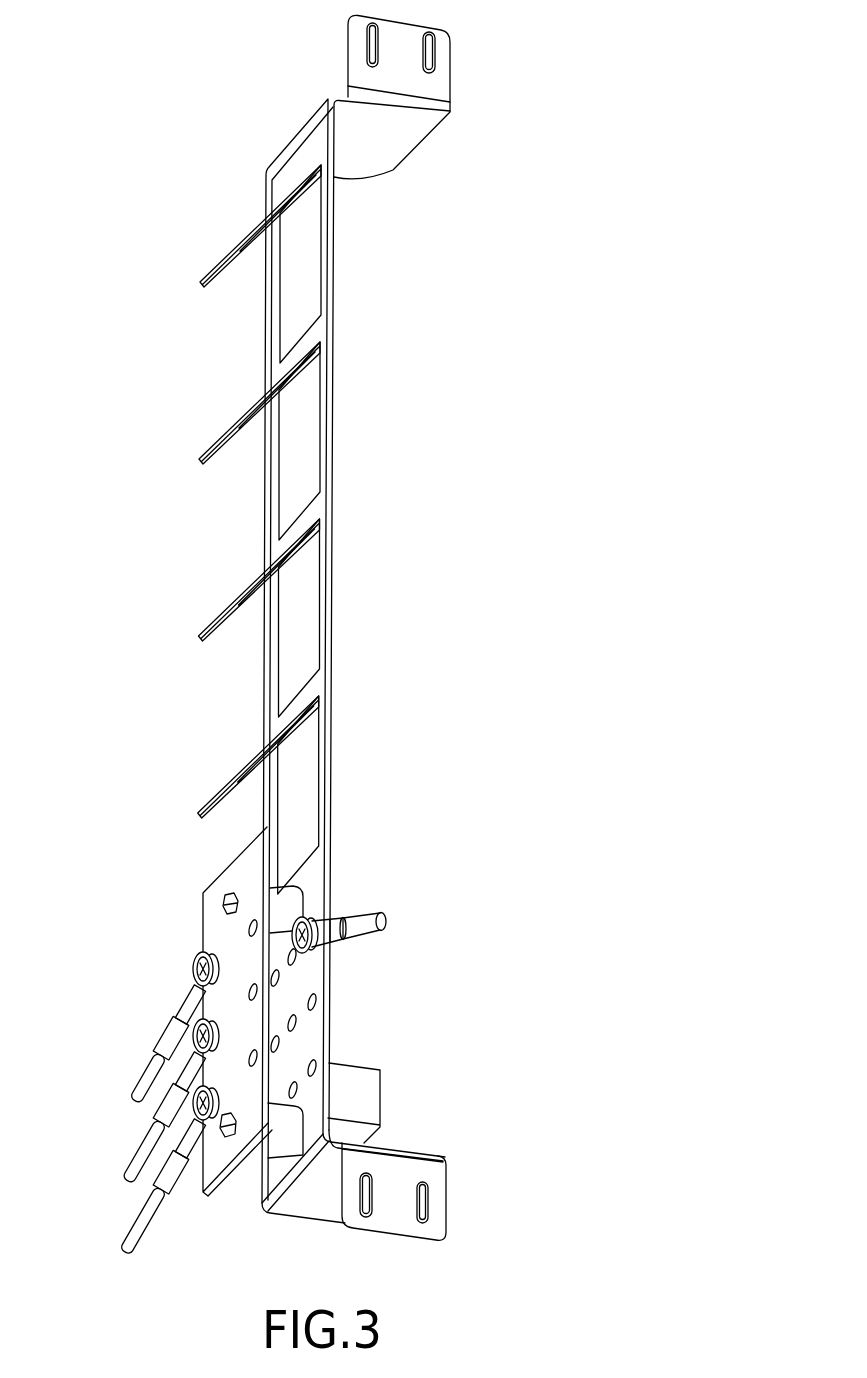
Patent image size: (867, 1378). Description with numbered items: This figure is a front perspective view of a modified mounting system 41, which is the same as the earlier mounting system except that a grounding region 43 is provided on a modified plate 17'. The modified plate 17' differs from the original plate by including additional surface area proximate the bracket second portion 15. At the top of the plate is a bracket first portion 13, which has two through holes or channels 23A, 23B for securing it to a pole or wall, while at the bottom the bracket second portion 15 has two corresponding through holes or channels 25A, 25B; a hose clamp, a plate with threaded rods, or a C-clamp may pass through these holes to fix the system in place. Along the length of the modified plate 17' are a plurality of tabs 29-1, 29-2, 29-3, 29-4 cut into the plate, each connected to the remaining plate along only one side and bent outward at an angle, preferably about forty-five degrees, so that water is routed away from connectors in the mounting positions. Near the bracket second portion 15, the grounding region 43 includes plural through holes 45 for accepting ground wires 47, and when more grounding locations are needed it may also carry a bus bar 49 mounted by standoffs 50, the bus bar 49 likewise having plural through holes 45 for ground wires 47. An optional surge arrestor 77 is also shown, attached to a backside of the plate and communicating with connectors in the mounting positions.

The modified mounting system 41 is at (549, 122).
The modified plate 17' is at (342, 648).
The bracket first portion 13 is at (392, 151).
The bracket second portion 15 is at (305, 1200).
The through hole or channel 23A is at (367, 42).
The through hole or channel 23B is at (436, 51).
The through hole or channel 25A is at (363, 1196).
The through hole or channel 25B is at (432, 1198).
The tab 29-1 is at (215, 260).
The tab 29-2 is at (215, 430).
The tab 29-3 is at (215, 608).
The tab 29-4 is at (215, 783).
The grounding region 43 is at (112, 971).
The through holes 45 is at (310, 1000).
The ground wires 47 is at (367, 912).
The bus bar 49 is at (240, 876).
The standoffs 50 is at (295, 887).
The surge arrestor 77 is at (365, 1107).